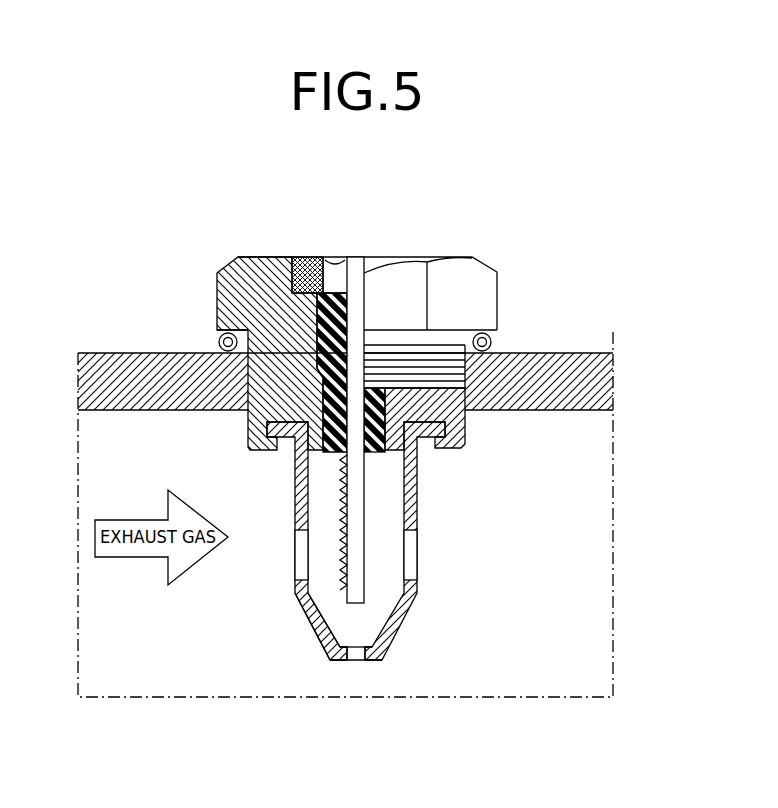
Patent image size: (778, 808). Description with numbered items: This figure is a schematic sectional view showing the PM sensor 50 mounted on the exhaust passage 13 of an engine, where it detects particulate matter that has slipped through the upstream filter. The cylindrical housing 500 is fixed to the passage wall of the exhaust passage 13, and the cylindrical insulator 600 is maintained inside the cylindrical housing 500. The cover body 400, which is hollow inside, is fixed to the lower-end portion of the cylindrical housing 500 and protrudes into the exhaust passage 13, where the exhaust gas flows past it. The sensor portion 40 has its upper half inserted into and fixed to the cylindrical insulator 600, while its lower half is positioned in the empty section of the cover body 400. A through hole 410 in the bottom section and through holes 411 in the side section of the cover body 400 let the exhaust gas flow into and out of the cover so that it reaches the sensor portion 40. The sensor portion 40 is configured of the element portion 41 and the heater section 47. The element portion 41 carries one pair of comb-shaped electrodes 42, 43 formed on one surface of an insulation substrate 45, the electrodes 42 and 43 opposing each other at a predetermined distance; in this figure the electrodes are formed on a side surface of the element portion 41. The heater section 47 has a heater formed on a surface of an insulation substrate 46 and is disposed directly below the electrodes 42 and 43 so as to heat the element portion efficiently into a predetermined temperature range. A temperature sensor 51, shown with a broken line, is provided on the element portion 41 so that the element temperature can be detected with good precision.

The exhaust passage 13 is at (345, 470).
The PM sensor 50 is at (398, 300).
The cylindrical housing 500 is at (239, 306).
The cylindrical insulator 600 is at (288, 227).
The sensor portion 40 is at (435, 448).
The temperature sensor 51 is at (328, 522).
The cover body 400 is at (402, 541).
The through hole 411 is at (377, 564).
The through hole 410 is at (378, 707).
The element portion 41 is at (403, 771).
The electrode 42 is at (282, 670).
The electrode 43 is at (301, 679).
The insulation substrate 45 is at (327, 682).
The insulation substrate 46 is at (356, 707).
The heater section 47 is at (345, 727).